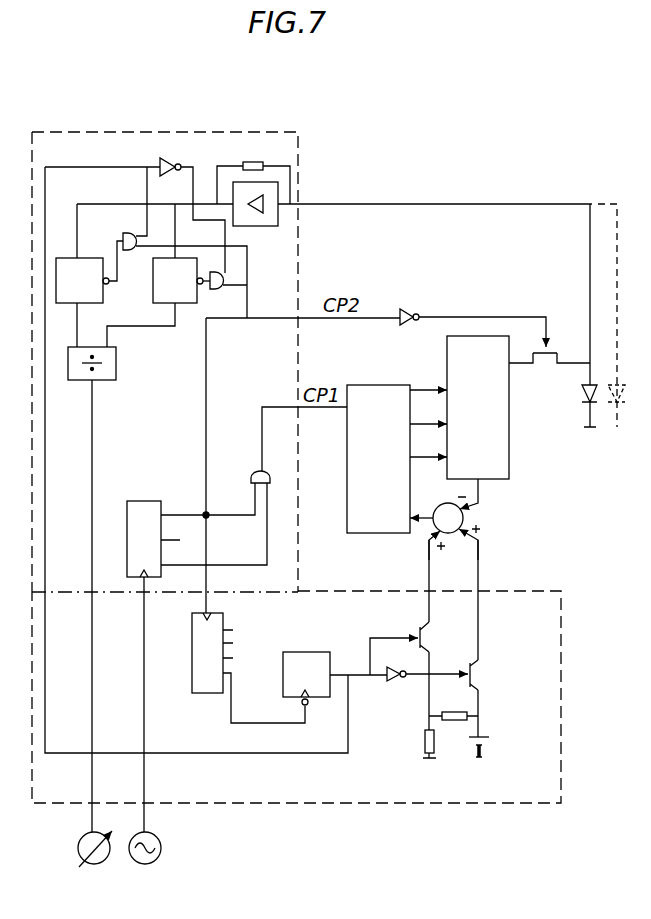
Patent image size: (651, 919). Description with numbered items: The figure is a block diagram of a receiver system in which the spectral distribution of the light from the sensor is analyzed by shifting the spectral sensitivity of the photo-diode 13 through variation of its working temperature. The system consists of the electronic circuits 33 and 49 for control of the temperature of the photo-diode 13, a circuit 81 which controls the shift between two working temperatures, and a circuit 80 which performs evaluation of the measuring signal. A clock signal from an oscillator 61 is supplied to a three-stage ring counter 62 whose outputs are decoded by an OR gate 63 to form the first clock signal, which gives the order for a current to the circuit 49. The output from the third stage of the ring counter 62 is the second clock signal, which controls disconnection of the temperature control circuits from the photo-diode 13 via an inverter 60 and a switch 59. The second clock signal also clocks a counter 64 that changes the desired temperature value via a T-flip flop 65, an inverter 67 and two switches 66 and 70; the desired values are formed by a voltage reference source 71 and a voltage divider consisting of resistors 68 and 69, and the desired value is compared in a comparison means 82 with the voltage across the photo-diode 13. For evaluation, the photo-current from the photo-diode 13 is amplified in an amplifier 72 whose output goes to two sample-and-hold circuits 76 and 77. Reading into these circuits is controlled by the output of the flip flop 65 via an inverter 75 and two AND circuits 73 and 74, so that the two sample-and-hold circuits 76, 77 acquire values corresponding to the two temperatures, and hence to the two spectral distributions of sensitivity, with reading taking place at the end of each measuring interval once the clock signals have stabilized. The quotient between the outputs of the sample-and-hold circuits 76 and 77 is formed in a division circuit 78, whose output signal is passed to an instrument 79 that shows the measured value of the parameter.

The photo-diode 13 is at (584, 394).
The electronic circuit 33 is at (510, 410).
The electronic circuit 49 is at (363, 385).
The switch 59 is at (548, 348).
The inverter 60 is at (410, 307).
The oscillator 61 is at (162, 846).
The three-stage ring counter 62 is at (137, 501).
The OR gate 63 is at (250, 478).
The counter 64 is at (224, 613).
The T-flip flop 65 is at (296, 652).
The switch 66 is at (418, 626).
The inverter 67 is at (397, 683).
The resistor 68 is at (424, 742).
The resistor 69 is at (457, 722).
The switch 70 is at (468, 664).
The voltage reference source 71 is at (486, 750).
The amplifier 72 is at (262, 228).
The AND circuit 73 is at (214, 292).
The AND circuit 74 is at (121, 240).
The inverter 75 is at (166, 160).
The sample-and-hold circuit 76 is at (152, 298).
The sample-and-hold circuit 77 is at (100, 304).
The division circuit 78 is at (117, 366).
The instrument 79 is at (78, 846).
The circuit 80 is at (224, 132).
The circuit 81 is at (527, 590).
The comparison means 82 is at (466, 508).